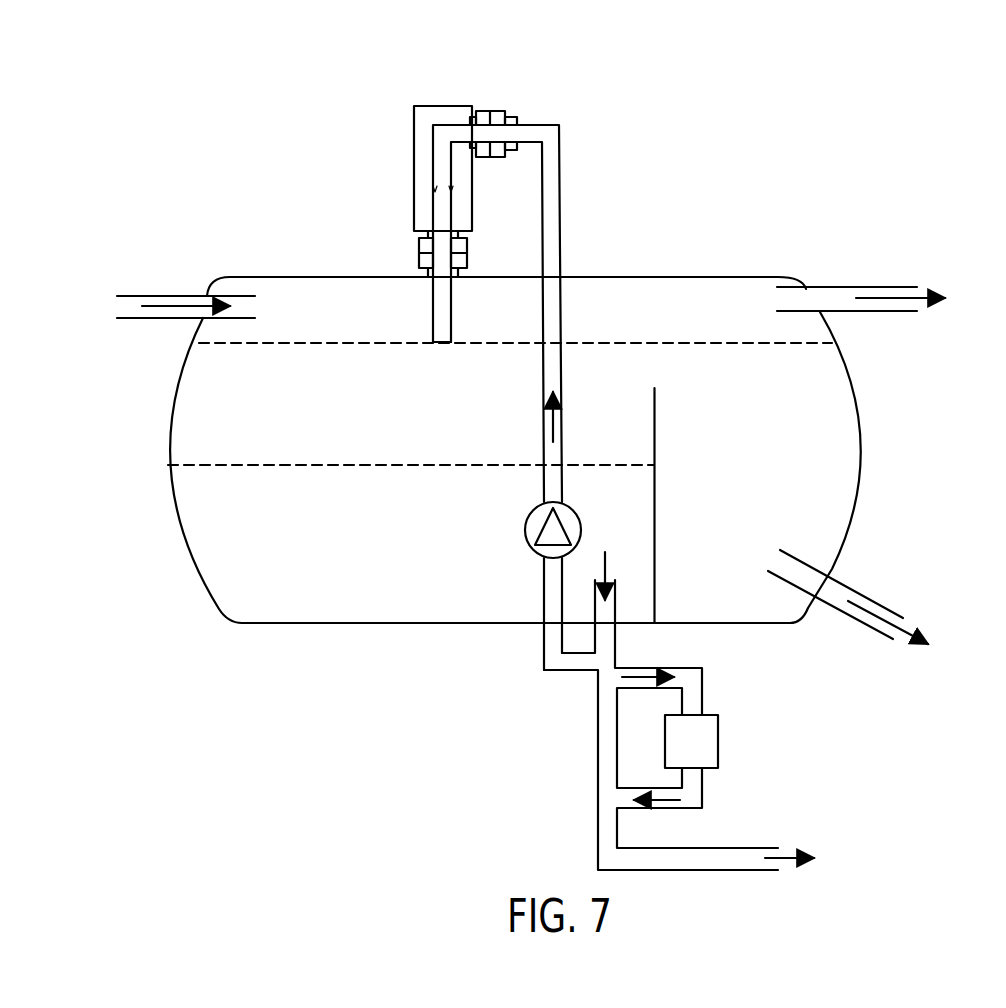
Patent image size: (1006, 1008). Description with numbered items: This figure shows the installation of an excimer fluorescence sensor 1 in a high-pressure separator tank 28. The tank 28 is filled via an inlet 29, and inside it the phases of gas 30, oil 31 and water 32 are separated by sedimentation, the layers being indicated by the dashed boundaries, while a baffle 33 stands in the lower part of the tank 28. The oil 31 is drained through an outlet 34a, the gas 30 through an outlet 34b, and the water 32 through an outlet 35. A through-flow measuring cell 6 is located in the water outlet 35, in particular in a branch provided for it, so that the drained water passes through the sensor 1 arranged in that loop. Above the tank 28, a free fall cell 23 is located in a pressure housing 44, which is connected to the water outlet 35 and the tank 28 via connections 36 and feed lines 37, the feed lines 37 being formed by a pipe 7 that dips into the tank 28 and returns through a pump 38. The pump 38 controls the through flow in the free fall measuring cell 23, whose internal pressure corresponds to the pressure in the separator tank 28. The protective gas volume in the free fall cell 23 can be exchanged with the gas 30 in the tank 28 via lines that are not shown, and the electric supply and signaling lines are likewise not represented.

The sensor device 1 is at (386, 180).
The through-flow measuring cell 6 is at (694, 698).
The circulation pipe 7 is at (553, 160).
The free fall cell 23 is at (417, 106).
The high-pressure separator tank 28 is at (171, 511).
The inlet 29 is at (160, 295).
The gas 30 is at (330, 318).
The oil 31 is at (198, 399).
The water 32 is at (241, 597).
The baffle weir 33 is at (657, 521).
The oil outlet 34a is at (905, 632).
The gas outlet 34b is at (924, 293).
The water outlet 35 is at (790, 857).
The connections 36 is at (490, 110).
The feed lines 37 is at (445, 332).
The pump 38 is at (550, 528).
The pressure housing 44 is at (455, 106).